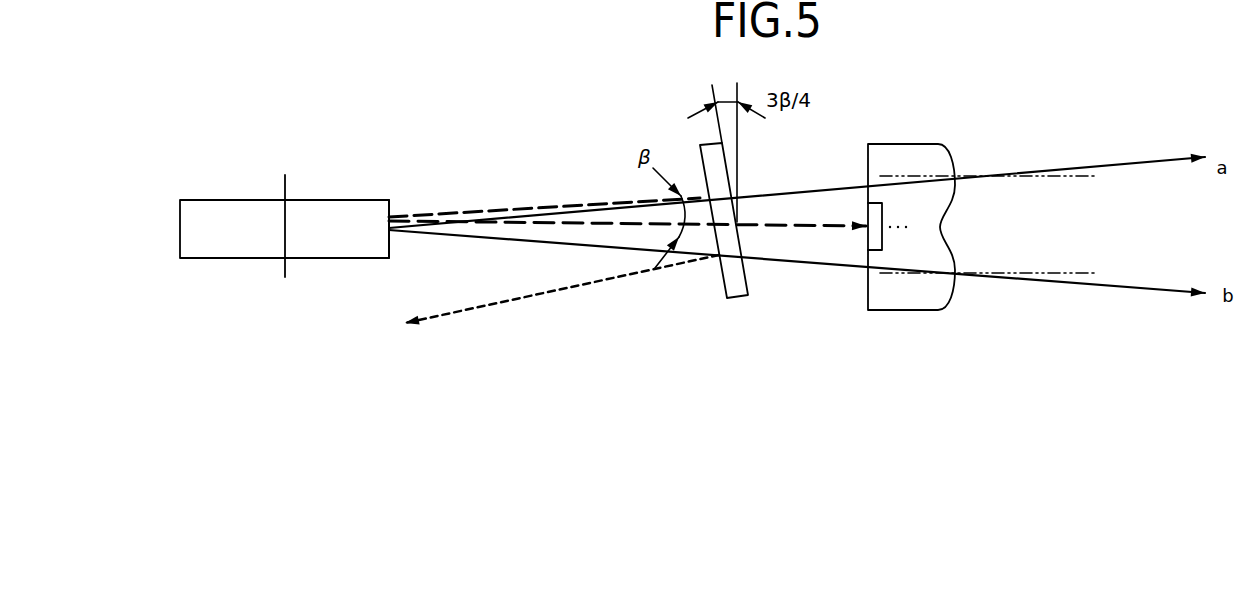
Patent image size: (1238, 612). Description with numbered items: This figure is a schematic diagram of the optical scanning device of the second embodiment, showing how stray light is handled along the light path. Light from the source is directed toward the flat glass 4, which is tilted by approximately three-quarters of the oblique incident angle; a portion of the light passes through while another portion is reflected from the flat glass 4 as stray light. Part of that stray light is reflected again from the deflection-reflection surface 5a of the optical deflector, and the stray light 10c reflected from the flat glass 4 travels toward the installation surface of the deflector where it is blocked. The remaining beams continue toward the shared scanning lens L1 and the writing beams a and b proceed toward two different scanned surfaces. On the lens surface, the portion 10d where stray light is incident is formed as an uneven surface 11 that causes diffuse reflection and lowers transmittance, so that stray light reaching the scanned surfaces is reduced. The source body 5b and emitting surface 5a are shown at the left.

The deflection-reflection surface 5a is at (392, 203).
The light source (semiconductor laser) 5b is at (357, 200).
The flat glass 4 is at (733, 302).
The stray light 10c is at (557, 298).
The portion where stray light is incident 10d is at (790, 230).
The uneven surface 11 is at (883, 247).
The lens L1 is at (900, 298).